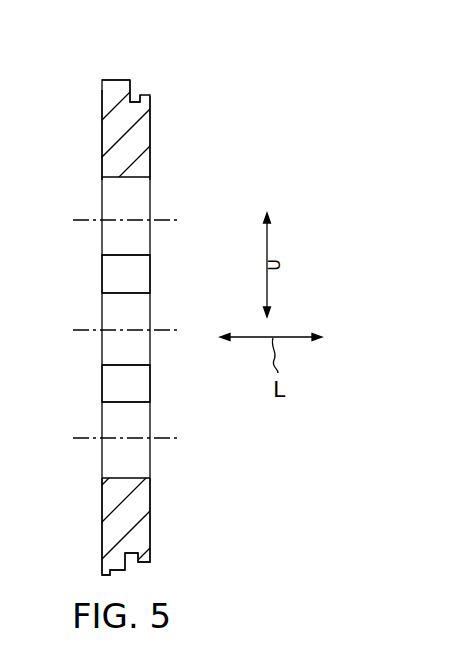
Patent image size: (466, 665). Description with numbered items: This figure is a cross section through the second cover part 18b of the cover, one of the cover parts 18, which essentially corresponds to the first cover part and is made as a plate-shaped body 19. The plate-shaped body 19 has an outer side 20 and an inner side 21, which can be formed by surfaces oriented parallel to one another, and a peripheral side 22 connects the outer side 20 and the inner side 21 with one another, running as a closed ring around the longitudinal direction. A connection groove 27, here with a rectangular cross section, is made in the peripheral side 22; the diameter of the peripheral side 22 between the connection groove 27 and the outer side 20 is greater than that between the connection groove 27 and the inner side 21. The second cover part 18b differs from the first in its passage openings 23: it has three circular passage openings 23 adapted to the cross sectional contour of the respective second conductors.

The cover part 18 is at (230, 311).
The second cover part 18b is at (275, 86).
The plate-shaped body 19 is at (116, 530).
The outer side 20 is at (96, 134).
The inner side 21 is at (156, 134).
The peripheral side 22 is at (117, 73).
The passage openings 23 is at (110, 237).
The connection groove 27 is at (133, 100).